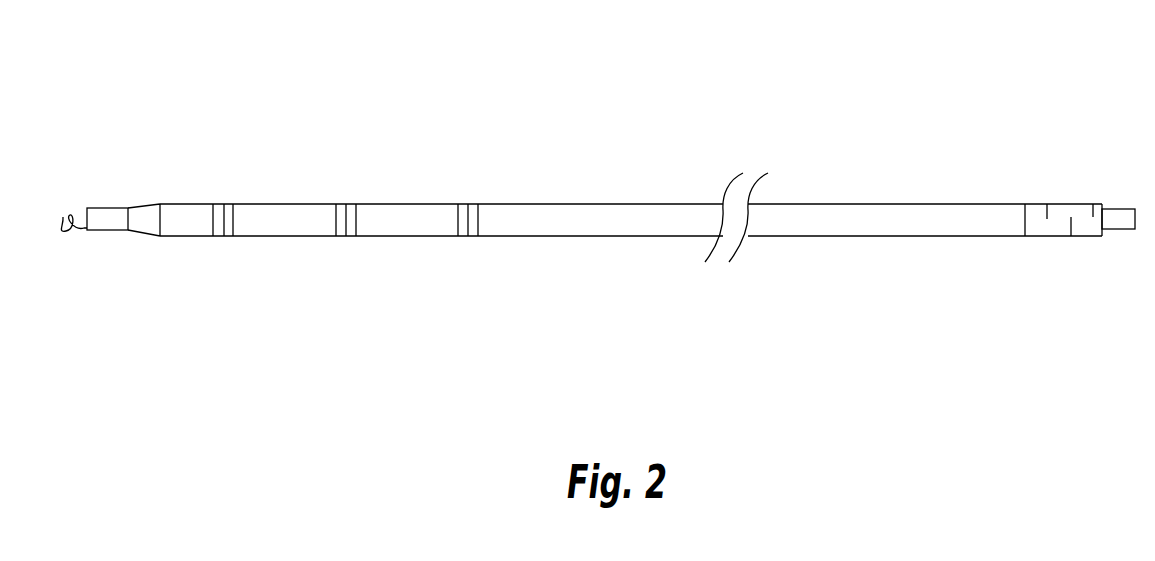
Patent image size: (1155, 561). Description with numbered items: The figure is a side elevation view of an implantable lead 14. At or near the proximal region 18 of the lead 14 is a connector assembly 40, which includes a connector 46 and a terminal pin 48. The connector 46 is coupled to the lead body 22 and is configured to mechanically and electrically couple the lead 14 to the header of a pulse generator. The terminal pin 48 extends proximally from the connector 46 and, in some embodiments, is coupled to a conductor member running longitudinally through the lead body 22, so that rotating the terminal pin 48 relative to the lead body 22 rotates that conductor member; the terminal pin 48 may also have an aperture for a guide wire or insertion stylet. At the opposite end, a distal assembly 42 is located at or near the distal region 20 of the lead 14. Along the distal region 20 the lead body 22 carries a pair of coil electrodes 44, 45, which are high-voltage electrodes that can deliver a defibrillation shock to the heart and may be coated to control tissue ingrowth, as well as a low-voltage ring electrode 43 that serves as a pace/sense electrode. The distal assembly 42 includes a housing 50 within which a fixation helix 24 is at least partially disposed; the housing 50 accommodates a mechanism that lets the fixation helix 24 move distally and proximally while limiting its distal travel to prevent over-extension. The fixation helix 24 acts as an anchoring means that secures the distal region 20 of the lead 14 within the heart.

The lead 14 is at (602, 72).
The proximal region 18 is at (952, 118).
The distal region 20 is at (228, 267).
The lead body 22 is at (633, 228).
The fixation helix 24 is at (63, 217).
The connector assembly 40 is at (1073, 248).
The distal assembly 42 is at (122, 177).
The electrode 43 is at (137, 206).
The coil electrode 44 is at (288, 213).
The coil electrode 45 is at (413, 212).
The connector 46 is at (1057, 203).
The terminal pin 48 is at (1120, 209).
The housing 50 is at (105, 229).